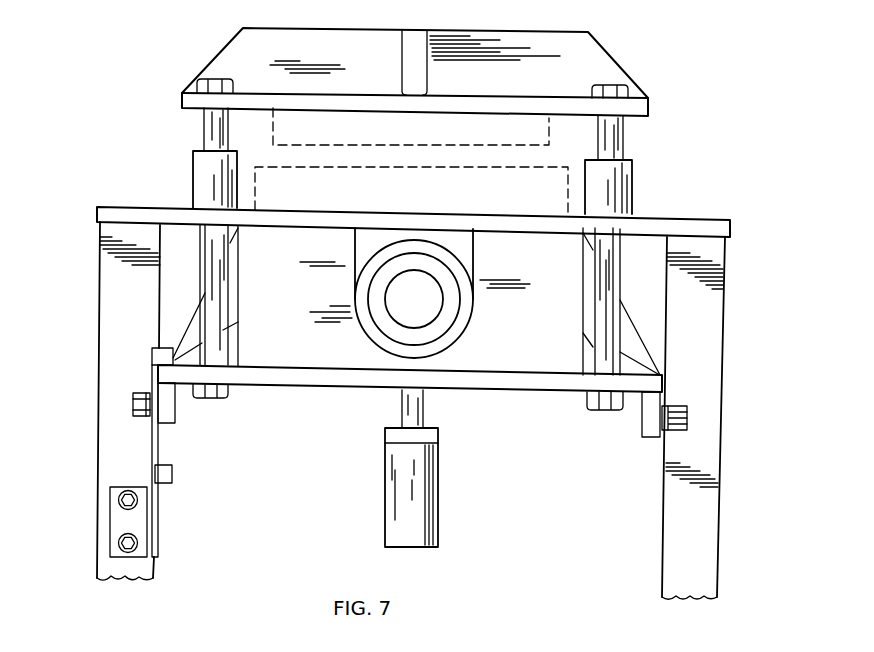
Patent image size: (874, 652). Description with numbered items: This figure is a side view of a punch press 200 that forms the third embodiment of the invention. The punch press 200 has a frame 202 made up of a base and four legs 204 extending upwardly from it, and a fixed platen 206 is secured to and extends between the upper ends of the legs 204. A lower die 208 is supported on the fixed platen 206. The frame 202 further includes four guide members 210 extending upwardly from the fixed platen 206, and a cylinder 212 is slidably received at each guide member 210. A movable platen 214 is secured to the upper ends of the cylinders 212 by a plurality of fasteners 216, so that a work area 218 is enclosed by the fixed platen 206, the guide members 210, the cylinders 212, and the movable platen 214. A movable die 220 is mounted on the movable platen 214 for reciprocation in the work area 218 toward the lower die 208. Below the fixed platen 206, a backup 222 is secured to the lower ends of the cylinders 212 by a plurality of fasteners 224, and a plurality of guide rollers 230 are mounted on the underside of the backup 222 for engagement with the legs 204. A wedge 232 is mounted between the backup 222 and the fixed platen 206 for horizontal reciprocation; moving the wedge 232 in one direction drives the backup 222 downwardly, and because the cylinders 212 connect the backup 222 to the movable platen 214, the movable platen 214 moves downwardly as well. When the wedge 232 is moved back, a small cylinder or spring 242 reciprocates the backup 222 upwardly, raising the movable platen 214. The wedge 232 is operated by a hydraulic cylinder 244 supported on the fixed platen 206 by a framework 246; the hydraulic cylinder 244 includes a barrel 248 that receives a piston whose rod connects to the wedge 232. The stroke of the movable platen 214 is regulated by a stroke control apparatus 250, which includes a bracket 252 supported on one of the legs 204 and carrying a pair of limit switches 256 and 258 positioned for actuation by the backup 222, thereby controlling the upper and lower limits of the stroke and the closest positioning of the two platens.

The punch press 200 is at (200, 60).
The frame 202 is at (90, 483).
The legs 204 is at (103, 548).
The fixed platen 206 is at (97, 207).
The lower die 208 is at (437, 202).
The guide members 210 is at (203, 191).
The cylinders 212 is at (210, 143).
The movable platen 214 is at (602, 67).
The fasteners 216 is at (198, 80).
The work area 218 is at (260, 146).
The movable die 220 is at (437, 138).
The backup 222 is at (325, 395).
The fasteners 224 is at (229, 393).
The guide rollers 230 is at (675, 405).
The wedge 232 is at (545, 358).
The small cylinder or spring 242 is at (402, 483).
The hydraulic cylinder 244 is at (508, 288).
The framework 246 is at (463, 242).
The barrel 248 is at (437, 307).
The stroke control apparatus 250 is at (160, 508).
The bracket 252 is at (155, 445).
The limit switch 256 is at (168, 352).
The limit switch 258 is at (172, 475).